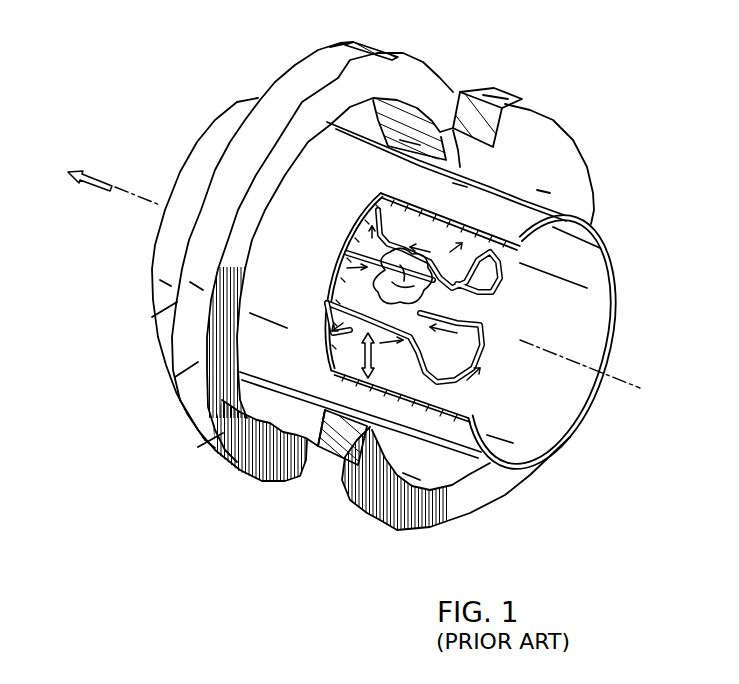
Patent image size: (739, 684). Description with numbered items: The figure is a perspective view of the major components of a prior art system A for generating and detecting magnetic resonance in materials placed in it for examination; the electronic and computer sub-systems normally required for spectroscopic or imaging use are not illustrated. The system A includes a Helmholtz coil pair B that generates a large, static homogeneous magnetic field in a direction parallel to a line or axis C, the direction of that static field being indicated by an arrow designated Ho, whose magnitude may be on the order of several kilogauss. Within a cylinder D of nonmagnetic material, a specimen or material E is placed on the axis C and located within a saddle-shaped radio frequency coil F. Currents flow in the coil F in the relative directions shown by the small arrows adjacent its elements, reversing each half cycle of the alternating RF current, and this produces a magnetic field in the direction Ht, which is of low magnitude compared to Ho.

The system A is at (371, 300).
The Helmholtz coil pair B is at (472, 101).
The axis C is at (396, 287).
The cylinder D is at (447, 301).
The material E is at (441, 285).
The saddle-shaped coil F is at (439, 296).
The static magnetic field direction Ho is at (71, 168).
The RF magnetic field direction Ht is at (381, 355).